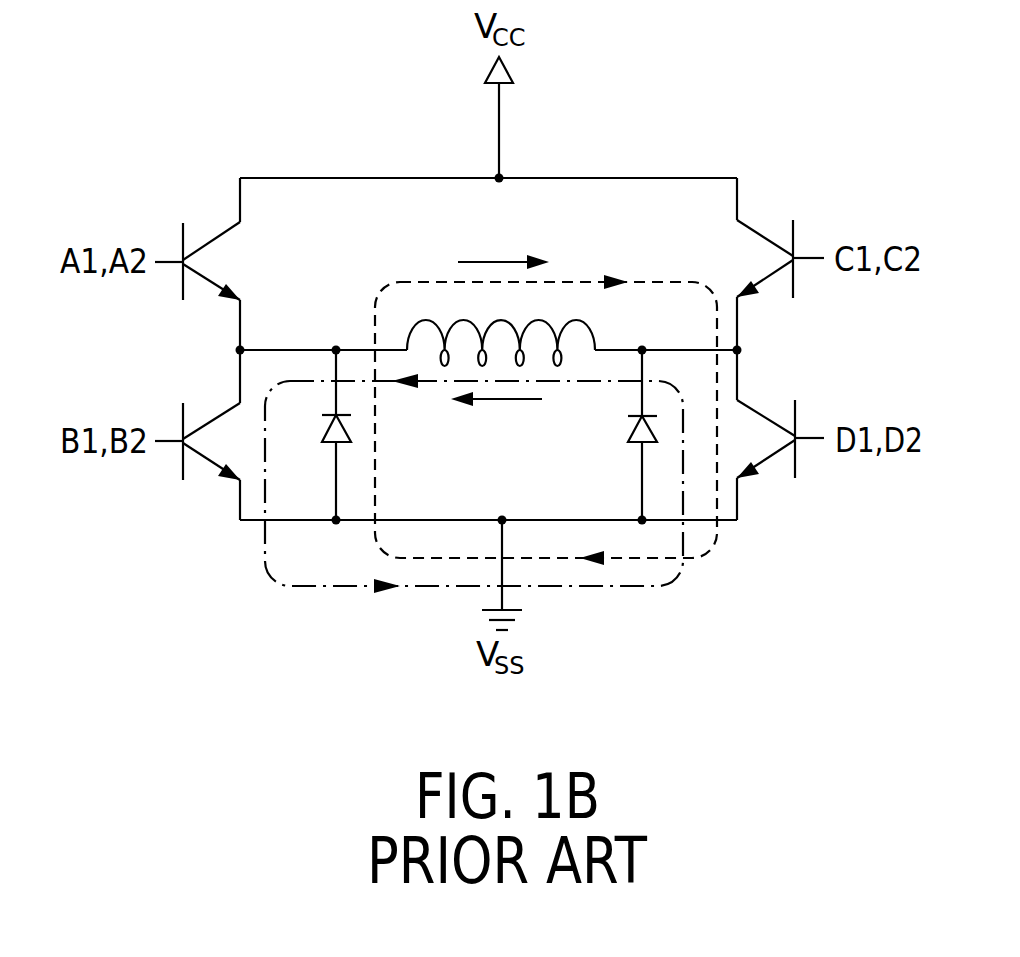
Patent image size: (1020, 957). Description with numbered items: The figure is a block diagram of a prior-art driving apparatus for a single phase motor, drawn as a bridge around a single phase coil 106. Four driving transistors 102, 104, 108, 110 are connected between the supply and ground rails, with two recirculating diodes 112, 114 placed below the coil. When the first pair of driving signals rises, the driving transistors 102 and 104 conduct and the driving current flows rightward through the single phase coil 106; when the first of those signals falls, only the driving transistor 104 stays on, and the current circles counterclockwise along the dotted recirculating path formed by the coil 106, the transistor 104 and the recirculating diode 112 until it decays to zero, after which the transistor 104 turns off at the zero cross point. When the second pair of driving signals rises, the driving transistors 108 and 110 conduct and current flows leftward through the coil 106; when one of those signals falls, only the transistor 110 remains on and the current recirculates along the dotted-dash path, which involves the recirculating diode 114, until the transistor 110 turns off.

The driving transistor 102 is at (230, 228).
The driving transistor 104 is at (768, 458).
The single phase coil 106 is at (538, 320).
The driving transistor 108 is at (758, 230).
The driving transistor 110 is at (210, 460).
The recirculating diode 112 is at (347, 432).
The recirculating diode 114 is at (632, 430).